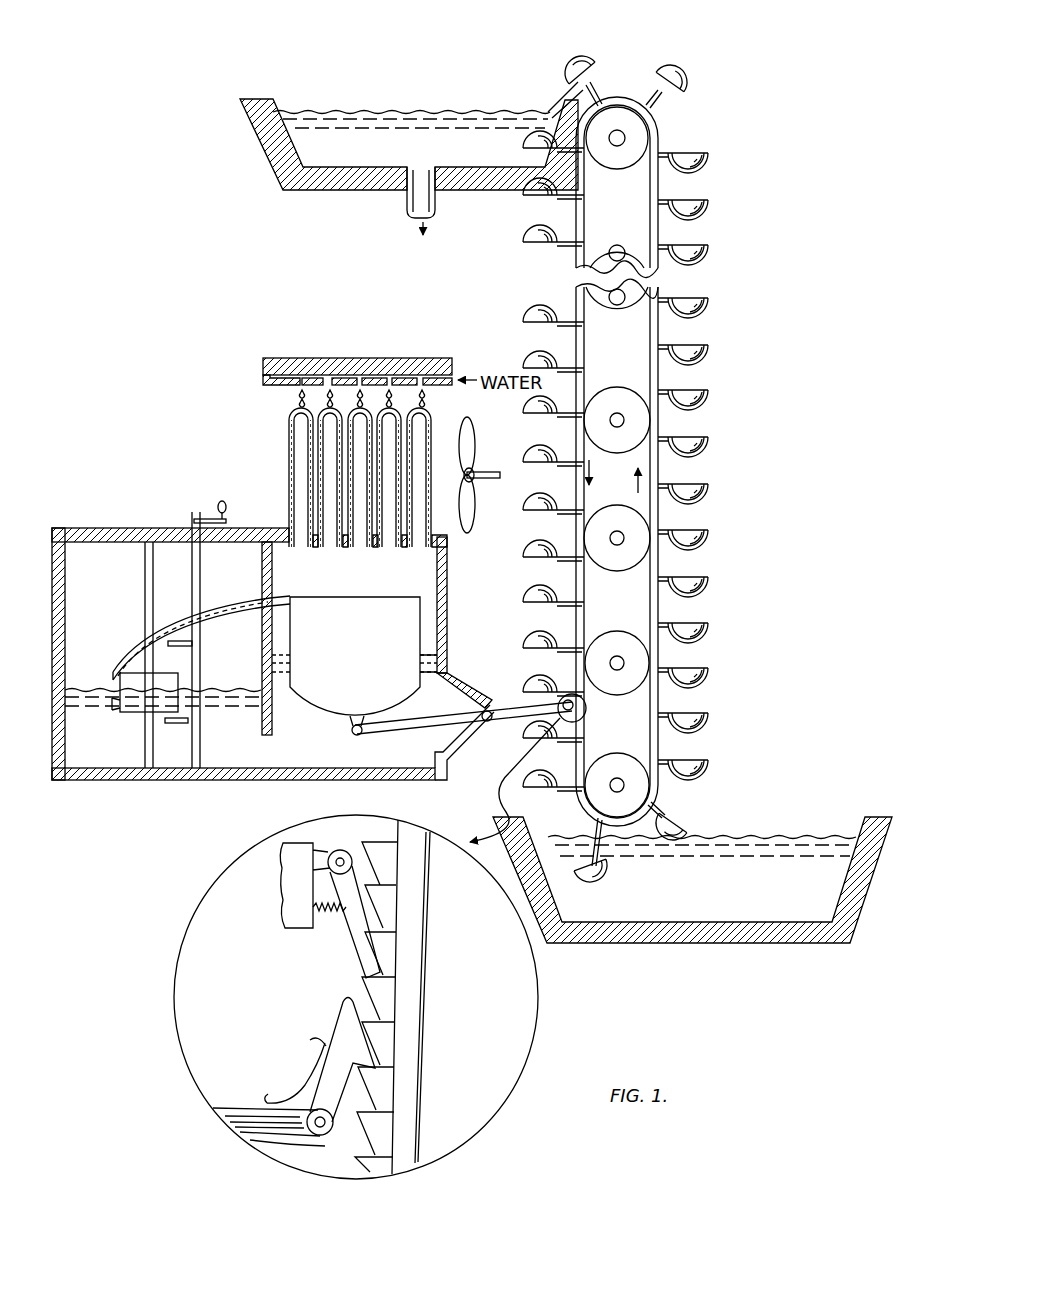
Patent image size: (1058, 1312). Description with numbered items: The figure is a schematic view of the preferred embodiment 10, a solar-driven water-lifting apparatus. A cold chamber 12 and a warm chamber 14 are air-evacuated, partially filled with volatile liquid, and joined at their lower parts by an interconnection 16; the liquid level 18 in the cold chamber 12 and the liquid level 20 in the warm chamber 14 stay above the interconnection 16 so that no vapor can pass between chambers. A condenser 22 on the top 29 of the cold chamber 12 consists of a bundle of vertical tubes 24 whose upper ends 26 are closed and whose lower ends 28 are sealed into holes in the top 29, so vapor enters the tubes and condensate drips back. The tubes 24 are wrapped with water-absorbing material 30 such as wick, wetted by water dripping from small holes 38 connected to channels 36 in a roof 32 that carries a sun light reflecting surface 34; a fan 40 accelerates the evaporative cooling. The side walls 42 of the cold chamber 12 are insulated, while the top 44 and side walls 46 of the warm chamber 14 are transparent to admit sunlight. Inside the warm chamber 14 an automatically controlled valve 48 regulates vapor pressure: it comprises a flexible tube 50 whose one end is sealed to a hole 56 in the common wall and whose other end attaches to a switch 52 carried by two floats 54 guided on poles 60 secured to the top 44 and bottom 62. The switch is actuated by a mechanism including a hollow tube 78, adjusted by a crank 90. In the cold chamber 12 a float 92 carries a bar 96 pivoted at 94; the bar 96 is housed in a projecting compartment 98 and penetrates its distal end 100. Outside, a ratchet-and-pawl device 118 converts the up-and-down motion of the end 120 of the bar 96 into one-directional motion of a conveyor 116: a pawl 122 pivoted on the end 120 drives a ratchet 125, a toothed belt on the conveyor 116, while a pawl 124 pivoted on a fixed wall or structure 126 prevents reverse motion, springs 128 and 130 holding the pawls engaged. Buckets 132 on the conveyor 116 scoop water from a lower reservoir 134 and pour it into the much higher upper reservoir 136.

The preferred embodiment 10 is at (240, 312).
The cold chamber 12 is at (420, 583).
The warm chamber 14 is at (95, 570).
The interconnection 16 is at (267, 753).
The liquid level 18 is at (427, 655).
The liquid level 20 is at (228, 688).
The condenser 22 is at (262, 455).
The vertical tubes 24 is at (291, 435).
The upper ends 26 is at (297, 410).
The lower ends 28 is at (295, 543).
The top 29 is at (338, 545).
The water-absorbing material 30 is at (289, 487).
The roof 32 is at (325, 352).
The sun light reflecting surface 34 is at (382, 360).
The channels 36 is at (427, 377).
The small holes 38 is at (421, 386).
The fan 40 is at (469, 428).
The side walls 42 is at (446, 622).
The top 44 is at (85, 528).
The side walls 46 is at (55, 633).
The automatically controlled valve 48 is at (110, 634).
The flexible tube 50 is at (232, 608).
The switch 52 is at (158, 724).
The floats 54 is at (137, 707).
The hole 56 is at (278, 598).
The poles 60 is at (147, 597).
The bottom 62 is at (115, 767).
The hollow tube 78 is at (197, 647).
The crank 90 is at (220, 504).
The float 92 is at (353, 605).
The pivot 94 is at (352, 734).
The bar 96 is at (412, 720).
The projecting compartment 98 is at (465, 685).
The distal end 100 is at (496, 727).
The conveyor 116 is at (752, 440).
The ratchet-and-pawl device 118 is at (548, 700).
The end 120 is at (318, 1135).
The pawl 122 is at (343, 1010).
The pawl 124 is at (360, 917).
The ratchet 125 is at (362, 978).
The fixed wall or structure 126 is at (277, 885).
The spring 128 is at (307, 1087).
The spring 130 is at (328, 912).
The buckets 132 is at (700, 635).
The lower reservoir 134 is at (762, 827).
The upper reservoir 136 is at (420, 93).